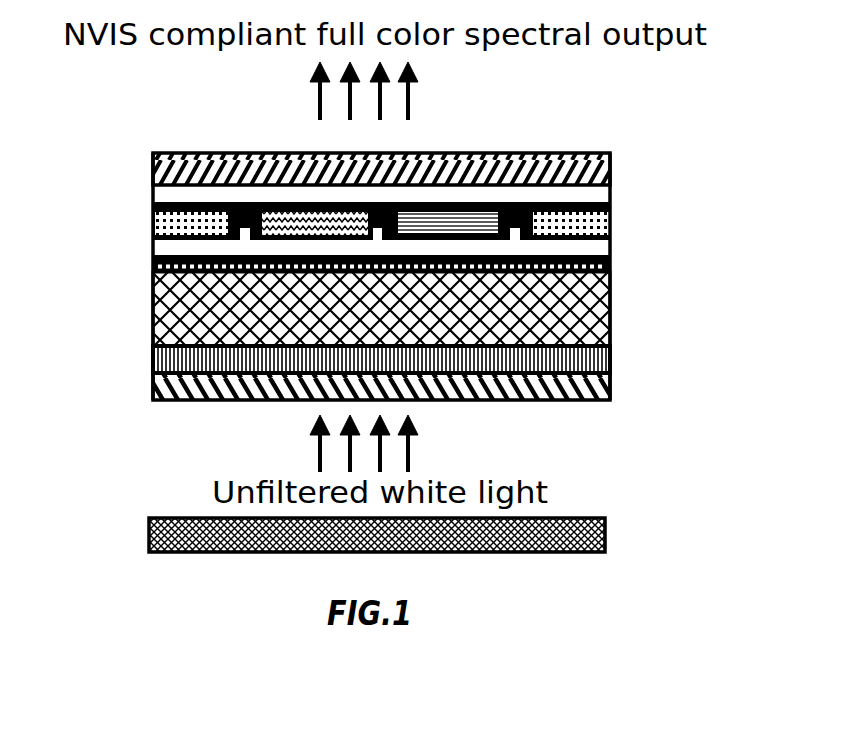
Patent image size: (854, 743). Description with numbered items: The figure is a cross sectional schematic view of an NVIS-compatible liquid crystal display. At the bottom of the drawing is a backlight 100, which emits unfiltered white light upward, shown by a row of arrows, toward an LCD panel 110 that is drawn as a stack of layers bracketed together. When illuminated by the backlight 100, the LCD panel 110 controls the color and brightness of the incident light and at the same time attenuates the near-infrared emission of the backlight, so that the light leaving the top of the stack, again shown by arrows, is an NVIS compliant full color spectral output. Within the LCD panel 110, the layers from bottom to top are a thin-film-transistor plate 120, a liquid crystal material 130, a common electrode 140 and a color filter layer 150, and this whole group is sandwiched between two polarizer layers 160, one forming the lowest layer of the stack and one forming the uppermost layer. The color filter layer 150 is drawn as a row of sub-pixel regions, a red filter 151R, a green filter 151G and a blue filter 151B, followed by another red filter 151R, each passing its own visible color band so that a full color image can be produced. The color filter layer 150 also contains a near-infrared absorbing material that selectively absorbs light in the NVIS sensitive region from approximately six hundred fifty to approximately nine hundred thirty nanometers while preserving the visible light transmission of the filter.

The backlight 100 is at (608, 530).
The LCD panel 110 is at (133, 152).
The thin-film-transistor (TFT) plate 120 is at (613, 358).
The liquid crystal material 130 is at (614, 328).
The common electrode 140 is at (612, 262).
The color filter layer 150 is at (407, 172).
The red color filter pixel 151R is at (185, 228).
The green color filter pixel 151G is at (280, 220).
The blue color filter pixel 151B is at (432, 225).
The polarizer layers 160 is at (612, 163).